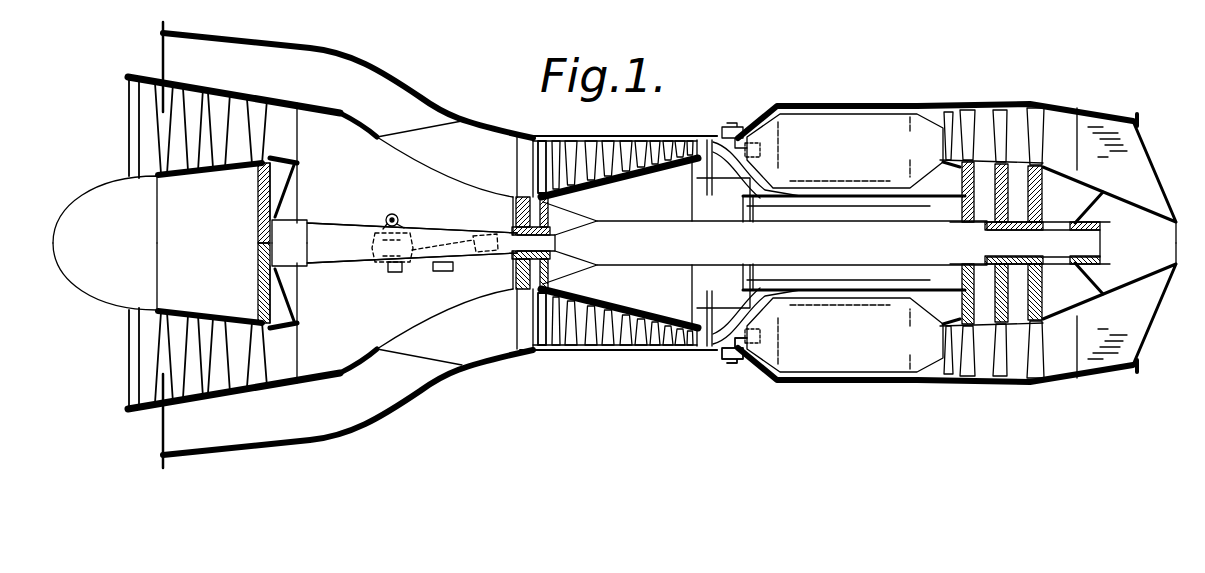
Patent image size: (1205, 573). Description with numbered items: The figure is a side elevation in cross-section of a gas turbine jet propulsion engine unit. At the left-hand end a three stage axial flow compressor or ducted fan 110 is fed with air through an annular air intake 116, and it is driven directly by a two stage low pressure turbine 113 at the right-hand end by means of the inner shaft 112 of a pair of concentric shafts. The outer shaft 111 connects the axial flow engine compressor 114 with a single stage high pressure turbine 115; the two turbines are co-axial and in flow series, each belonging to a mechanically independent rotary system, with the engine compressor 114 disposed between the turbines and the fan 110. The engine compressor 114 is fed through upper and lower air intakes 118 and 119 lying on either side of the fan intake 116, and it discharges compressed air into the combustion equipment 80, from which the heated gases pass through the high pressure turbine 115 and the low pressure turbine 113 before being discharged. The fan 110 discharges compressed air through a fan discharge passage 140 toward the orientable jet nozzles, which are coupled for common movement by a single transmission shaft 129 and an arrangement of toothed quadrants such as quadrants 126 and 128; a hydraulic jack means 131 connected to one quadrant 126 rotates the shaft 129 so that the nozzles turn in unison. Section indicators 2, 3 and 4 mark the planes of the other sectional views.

The combustion equipment 80 is at (863, 126).
The ducted fan 110 is at (175, 128).
The outer shaft 111 is at (730, 347).
The inner shaft 112 is at (928, 252).
The low pressure turbine 113 is at (1043, 112).
The engine compressor 114 is at (627, 136).
The high pressure turbine 115 is at (968, 117).
The annular air intake 116 is at (135, 378).
The upper air intake 118 is at (200, 57).
The lower air intake 119 is at (215, 433).
The toothed quadrant 126 is at (395, 272).
The toothed quadrant 128 is at (360, 275).
The transmission shaft 129 is at (388, 214).
The hydraulic jack means 131 is at (445, 272).
The fan discharge passage 140 is at (410, 195).
The section line 4- 4 is at (400, 448).
The section line 2 is at (634, 372).
The section line 3 is at (1200, 243).